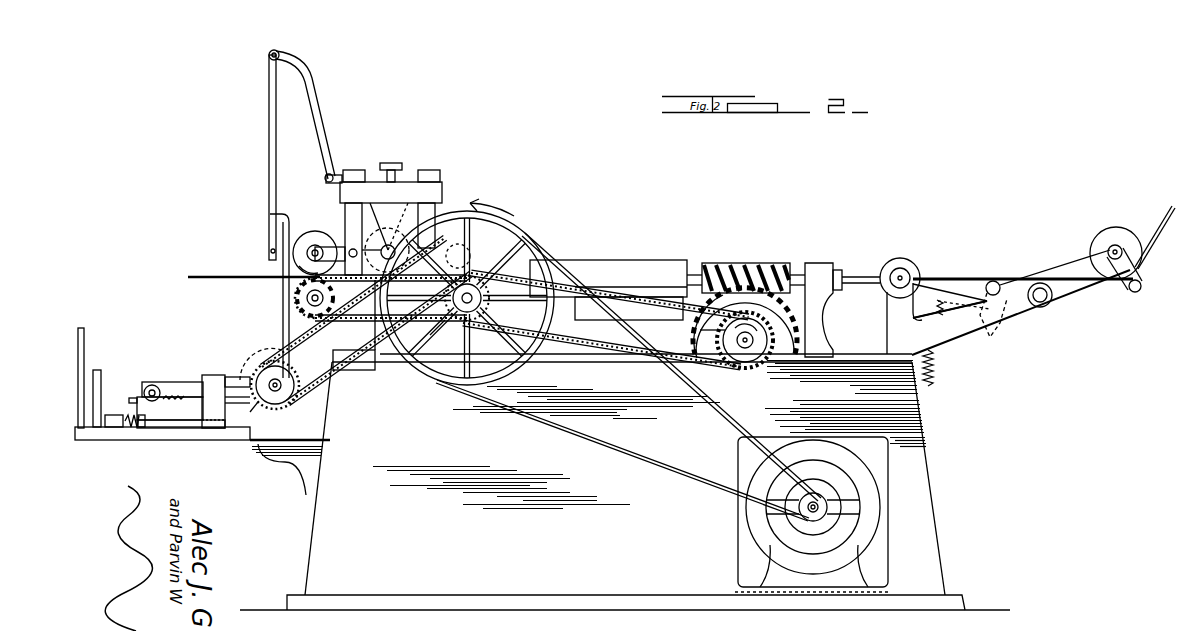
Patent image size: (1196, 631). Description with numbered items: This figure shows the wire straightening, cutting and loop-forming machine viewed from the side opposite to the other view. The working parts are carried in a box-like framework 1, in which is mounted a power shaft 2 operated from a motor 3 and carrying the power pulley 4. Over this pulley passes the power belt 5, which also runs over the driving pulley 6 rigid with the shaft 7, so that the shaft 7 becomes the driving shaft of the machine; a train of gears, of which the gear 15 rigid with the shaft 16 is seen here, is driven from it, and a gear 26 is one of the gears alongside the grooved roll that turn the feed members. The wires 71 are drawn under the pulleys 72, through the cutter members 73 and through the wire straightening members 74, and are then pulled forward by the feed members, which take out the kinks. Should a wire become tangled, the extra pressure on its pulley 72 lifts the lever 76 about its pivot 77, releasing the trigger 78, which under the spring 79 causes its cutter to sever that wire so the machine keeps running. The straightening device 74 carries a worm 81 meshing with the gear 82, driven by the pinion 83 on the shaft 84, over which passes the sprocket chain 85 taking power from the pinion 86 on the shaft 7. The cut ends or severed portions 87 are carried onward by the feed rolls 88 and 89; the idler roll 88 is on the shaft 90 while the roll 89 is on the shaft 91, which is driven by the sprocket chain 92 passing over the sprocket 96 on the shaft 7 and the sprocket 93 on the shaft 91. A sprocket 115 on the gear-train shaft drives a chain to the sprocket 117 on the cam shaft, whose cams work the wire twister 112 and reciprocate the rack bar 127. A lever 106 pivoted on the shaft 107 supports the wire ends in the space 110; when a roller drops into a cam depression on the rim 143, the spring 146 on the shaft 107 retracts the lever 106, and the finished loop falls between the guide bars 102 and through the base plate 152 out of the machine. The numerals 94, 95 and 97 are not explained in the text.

The framework 1 is at (312, 545).
The power shaft 2 is at (818, 510).
The motor 3 is at (862, 472).
The power pulley 4 is at (842, 507).
The power belt 5 is at (700, 484).
The driving pulley 6 is at (449, 378).
The shaft 7 is at (494, 306).
The gear 15 is at (397, 183).
The shaft 16 is at (391, 288).
The gear 26 is at (474, 248).
The wires 71 is at (1160, 232).
The pulleys 72 is at (1106, 236).
The cutter members 73 is at (900, 270).
The wire straightening members 74 is at (624, 262).
The lever 76 is at (1043, 270).
The pivot 77 is at (994, 281).
The trigger 78 is at (950, 286).
The spring 79 is at (936, 372).
The worm 81 is at (730, 263).
The gear 82 is at (797, 327).
The pinion 83 is at (704, 332).
The shaft 84 is at (748, 348).
The sprocket chain 85 is at (627, 356).
The pinion 86 is at (514, 272).
The severed portions 87 is at (220, 276).
The feed roll 88 is at (301, 236).
The feed roll 89 is at (305, 297).
The shaft 90 is at (317, 250).
The shaft 91 is at (300, 308).
The sprocket chain 92 is at (376, 358).
The sprocket 93 is at (322, 358).
The post 94 is at (269, 157).
The pivot 95 is at (280, 52).
The sprocket 96 is at (313, 117).
The pivot 97 is at (336, 170).
The guide bars 102 is at (85, 342).
The lever 106 is at (101, 373).
The shaft 107 is at (192, 430).
The space 110 is at (253, 416).
The wire twister 112 is at (154, 382).
The sprocket 115 is at (447, 339).
The sprocket 117 is at (278, 392).
The rack bar 127 is at (205, 393).
The rim 143 is at (259, 361).
The spring 146 is at (143, 430).
The base plate 152 is at (250, 443).